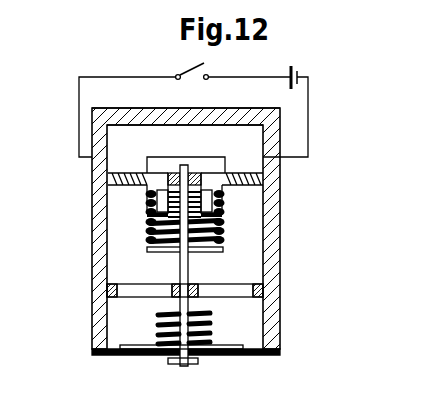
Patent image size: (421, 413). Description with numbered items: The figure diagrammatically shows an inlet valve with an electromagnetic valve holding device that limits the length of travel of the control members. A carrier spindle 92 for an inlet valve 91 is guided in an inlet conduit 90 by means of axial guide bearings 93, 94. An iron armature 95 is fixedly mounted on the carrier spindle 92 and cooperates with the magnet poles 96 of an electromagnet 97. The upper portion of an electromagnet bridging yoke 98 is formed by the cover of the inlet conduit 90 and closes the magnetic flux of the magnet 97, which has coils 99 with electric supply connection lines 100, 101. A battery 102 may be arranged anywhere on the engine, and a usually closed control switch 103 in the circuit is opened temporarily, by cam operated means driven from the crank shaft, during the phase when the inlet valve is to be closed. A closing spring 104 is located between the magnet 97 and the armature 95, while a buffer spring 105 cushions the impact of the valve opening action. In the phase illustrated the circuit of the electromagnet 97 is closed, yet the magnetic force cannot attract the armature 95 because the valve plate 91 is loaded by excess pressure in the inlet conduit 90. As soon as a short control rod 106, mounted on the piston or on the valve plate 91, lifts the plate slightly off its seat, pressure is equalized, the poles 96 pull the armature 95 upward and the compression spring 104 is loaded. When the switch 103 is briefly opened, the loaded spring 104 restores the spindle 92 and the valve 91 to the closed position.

The inlet conduit 90 is at (107, 233).
The inlet valve 91 is at (240, 346).
The carrier spindle 92 is at (186, 237).
The axial guide bearing 93 is at (172, 172).
The axial guide bearing 94 is at (203, 297).
The iron armature 95 is at (158, 251).
The magnet poles 96 is at (158, 196).
The electromagnet 97 is at (212, 200).
The electromagnet bridging yoke 98 is at (251, 111).
The coils 99 is at (119, 173).
The electric supply connection line 100 is at (197, 157).
The electric supply connection line 101 is at (78, 126).
The battery 102 is at (298, 74).
The control switch 103 is at (199, 68).
The closing spring 104 is at (222, 224).
The buffer spring 105 is at (160, 325).
The control rod 106 is at (176, 364).